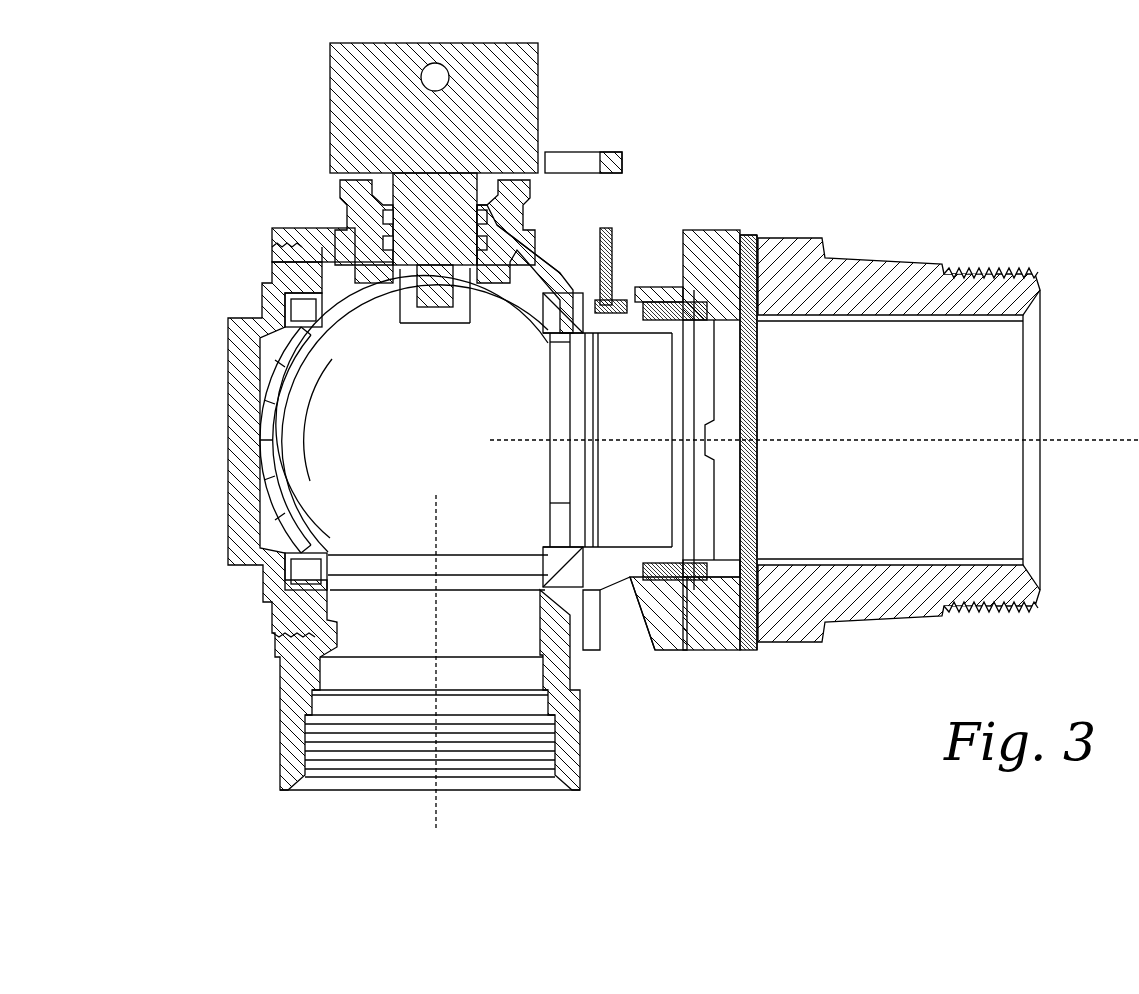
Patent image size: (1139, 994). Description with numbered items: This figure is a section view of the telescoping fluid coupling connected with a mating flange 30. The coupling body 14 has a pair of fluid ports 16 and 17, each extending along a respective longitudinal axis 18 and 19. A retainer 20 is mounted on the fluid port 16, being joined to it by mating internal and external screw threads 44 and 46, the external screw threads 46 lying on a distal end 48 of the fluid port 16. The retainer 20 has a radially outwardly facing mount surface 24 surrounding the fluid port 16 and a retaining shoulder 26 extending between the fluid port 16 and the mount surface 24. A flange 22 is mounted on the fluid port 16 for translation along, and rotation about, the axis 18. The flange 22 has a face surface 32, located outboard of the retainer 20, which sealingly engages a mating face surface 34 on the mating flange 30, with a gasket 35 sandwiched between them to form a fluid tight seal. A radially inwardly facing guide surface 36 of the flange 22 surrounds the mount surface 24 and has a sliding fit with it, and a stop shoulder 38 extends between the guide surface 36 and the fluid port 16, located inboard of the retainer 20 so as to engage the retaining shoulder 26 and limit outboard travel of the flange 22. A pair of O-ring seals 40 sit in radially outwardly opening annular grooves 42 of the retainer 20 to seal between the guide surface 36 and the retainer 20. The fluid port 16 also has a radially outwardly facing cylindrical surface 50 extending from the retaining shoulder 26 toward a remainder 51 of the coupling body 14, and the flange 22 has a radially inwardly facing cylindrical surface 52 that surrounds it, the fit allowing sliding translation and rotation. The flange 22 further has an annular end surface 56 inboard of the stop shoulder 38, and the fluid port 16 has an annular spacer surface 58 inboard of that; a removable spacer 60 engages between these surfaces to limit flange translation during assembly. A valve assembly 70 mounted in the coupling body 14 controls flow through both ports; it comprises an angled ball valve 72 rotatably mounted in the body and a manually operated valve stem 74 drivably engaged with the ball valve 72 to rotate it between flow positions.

The coupling body 14 is at (268, 228).
The fluid port 16 is at (642, 563).
The fluid port 17 is at (290, 780).
The longitudinal axis 18 is at (1080, 438).
The longitudinal axis 19 is at (440, 803).
The retainer 20 is at (728, 234).
The flange 22 is at (700, 232).
The mount surface 24 is at (650, 302).
The retaining shoulder 26 is at (633, 587).
The mating flange 30 is at (810, 238).
The face surface 32 is at (746, 650).
The mating face surface 34 is at (755, 650).
The gasket 35 is at (758, 240).
The guide surface 36 is at (745, 562).
The stop shoulder 38 is at (662, 335).
The O-ring seals 40 is at (668, 582).
The annular grooves 42 is at (705, 577).
The internal screw threads 44 is at (660, 547).
The external screw threads 46 is at (657, 300).
The distal end 48 is at (690, 332).
The radially outwardly facing cylindrical surface 50 is at (598, 602).
The remainder of the coupling body 51 is at (527, 262).
The radially inwardly facing cylindrical surface 52 is at (635, 335).
The annular end surface 56 is at (608, 587).
The annular spacer surface 58 is at (605, 542).
The removable spacer 60 is at (607, 228).
The valve assembly 70 is at (348, 262).
The angled ball valve 72 is at (245, 354).
The valve stem 74 is at (515, 119).